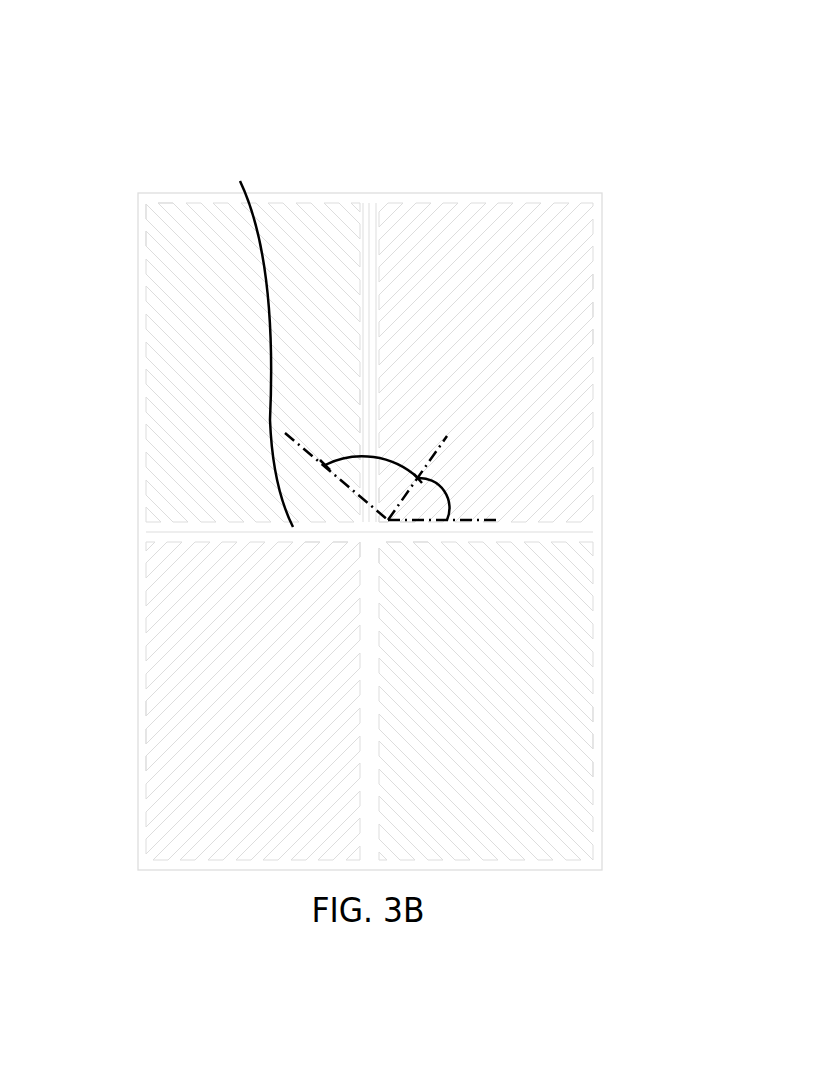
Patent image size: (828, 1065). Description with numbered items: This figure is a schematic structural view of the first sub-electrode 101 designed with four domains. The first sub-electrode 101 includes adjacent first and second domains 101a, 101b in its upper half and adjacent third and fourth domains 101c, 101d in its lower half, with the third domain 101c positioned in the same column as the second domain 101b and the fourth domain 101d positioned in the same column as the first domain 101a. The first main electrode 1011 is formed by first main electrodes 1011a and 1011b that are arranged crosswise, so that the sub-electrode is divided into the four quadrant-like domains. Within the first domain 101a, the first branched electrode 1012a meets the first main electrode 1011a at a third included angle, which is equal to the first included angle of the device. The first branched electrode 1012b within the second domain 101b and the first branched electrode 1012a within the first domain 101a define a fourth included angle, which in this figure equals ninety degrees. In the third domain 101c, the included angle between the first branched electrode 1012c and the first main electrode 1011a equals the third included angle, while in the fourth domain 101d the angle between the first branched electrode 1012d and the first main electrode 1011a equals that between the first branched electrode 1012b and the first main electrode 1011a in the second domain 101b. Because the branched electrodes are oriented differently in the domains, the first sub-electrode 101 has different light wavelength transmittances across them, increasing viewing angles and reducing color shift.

The first sub-electrode 101 is at (48, 62).
The first domain 101a is at (602, 252).
The second domain 101b is at (140, 241).
The third domain 101c is at (140, 606).
The fourth domain 101d is at (602, 612).
The first branched electrode 1012a is at (568, 363).
The first branched electrode 1012b is at (168, 330).
The first branched electrode 1012c is at (168, 704).
The first branched electrode 1012d is at (578, 705).
The first main electrode 1011 is at (222, 153).
The first main electrode 1011a is at (254, 341).
The first main electrode 1011b is at (372, 215).